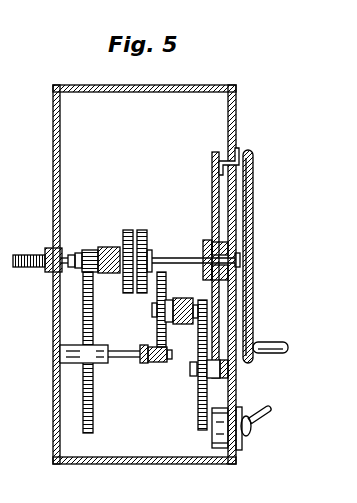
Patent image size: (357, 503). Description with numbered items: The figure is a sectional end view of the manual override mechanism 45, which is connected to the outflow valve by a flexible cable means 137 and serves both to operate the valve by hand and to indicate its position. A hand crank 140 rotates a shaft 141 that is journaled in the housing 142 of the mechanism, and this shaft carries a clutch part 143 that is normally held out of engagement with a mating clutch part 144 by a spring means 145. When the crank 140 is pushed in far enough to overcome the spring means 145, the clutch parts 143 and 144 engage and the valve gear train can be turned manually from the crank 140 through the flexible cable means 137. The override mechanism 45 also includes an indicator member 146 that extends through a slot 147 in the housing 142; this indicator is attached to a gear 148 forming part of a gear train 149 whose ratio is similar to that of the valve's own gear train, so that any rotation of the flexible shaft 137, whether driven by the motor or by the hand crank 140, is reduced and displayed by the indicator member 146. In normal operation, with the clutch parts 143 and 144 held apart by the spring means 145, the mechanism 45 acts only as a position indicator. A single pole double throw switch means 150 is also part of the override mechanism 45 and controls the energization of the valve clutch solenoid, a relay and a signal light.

The manual override mechanism 45 is at (213, 85).
The flexible cable means 137 is at (30, 255).
The hand crank 140 is at (268, 341).
The shaft 141 is at (171, 258).
The housing 142 is at (228, 109).
The clutch part 143 is at (143, 230).
The mating clutch part 144 is at (128, 230).
The spring means 145 is at (242, 252).
The indicator member 146 is at (242, 158).
The slot 147 is at (233, 158).
The gear 148 is at (215, 178).
The gear train 149 is at (180, 362).
The single pole double throw switch means 150 is at (251, 429).